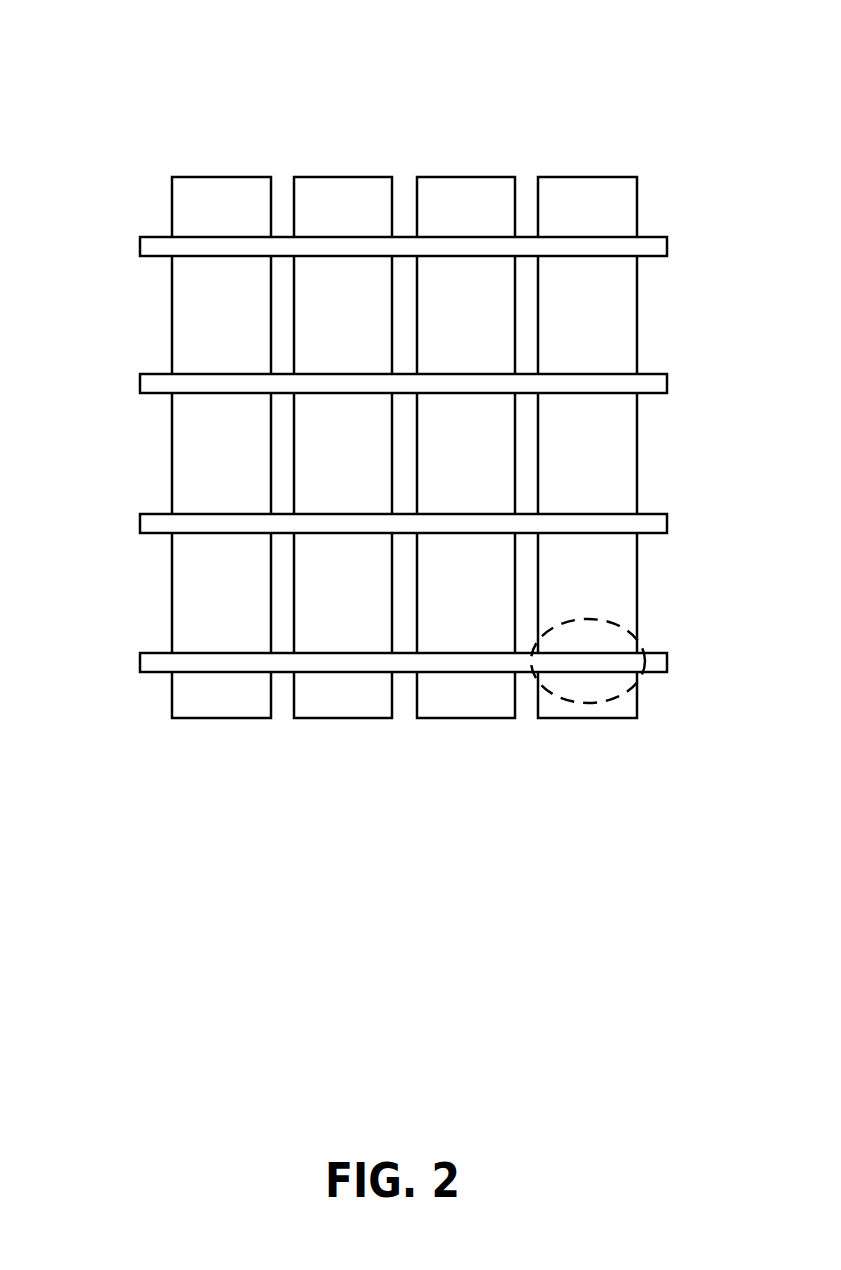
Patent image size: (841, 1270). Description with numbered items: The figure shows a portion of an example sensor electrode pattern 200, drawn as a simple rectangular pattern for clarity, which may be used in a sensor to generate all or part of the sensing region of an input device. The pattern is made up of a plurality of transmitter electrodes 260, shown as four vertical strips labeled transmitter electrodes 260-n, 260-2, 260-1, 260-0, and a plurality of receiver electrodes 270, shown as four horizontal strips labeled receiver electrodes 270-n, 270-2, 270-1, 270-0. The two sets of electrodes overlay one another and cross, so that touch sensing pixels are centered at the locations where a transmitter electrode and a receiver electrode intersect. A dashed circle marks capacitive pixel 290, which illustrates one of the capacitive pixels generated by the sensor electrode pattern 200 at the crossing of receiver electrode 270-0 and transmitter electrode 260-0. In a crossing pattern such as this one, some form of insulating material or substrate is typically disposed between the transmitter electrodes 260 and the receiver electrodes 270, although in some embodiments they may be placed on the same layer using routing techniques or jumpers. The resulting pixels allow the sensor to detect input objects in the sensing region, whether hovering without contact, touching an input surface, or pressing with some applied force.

The sensor electrode pattern 200 is at (122, 52).
The transmitter electrodes 260 is at (643, 158).
The transmitter electrode 260-n is at (193, 712).
The transmitter electrode 260-2 is at (305, 712).
The transmitter electrode 260-1 is at (427, 712).
The transmitter electrode 260-0 is at (553, 712).
The receiver electrodes 270 is at (687, 223).
The receiver electrode 270-n is at (146, 244).
The receiver electrode 270-2 is at (146, 381).
The receiver electrode 270-1 is at (146, 521).
The receiver electrode 270-0 is at (146, 660).
The capacitive pixel 290 is at (608, 700).